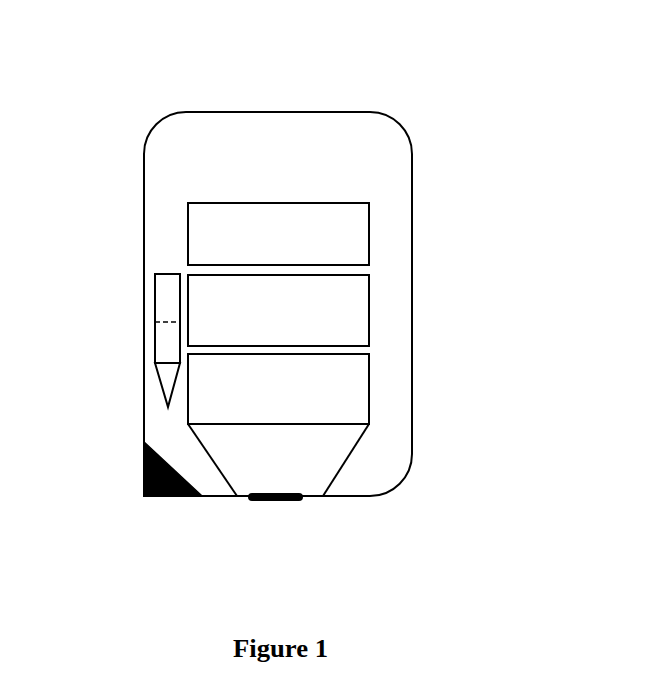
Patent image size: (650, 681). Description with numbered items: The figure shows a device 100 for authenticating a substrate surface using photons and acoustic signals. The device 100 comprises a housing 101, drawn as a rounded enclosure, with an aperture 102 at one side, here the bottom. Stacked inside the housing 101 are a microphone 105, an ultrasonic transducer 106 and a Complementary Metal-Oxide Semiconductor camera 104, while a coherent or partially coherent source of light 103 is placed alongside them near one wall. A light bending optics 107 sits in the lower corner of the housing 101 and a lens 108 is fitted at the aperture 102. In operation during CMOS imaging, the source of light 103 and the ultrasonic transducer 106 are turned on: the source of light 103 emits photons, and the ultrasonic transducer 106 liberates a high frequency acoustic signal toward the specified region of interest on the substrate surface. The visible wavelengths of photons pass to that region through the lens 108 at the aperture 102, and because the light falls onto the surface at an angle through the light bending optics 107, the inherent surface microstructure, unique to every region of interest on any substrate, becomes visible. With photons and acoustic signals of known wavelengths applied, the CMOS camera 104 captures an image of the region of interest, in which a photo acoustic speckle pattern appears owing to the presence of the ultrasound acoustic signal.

The device 100 is at (408, 83).
The housing 101 is at (412, 200).
The aperture 102 is at (238, 497).
The source of light 103 is at (155, 344).
The CMOS camera 104 is at (293, 408).
The microphone 105 is at (343, 233).
The ultrasonic transducer 106 is at (338, 331).
The light bending optics 107 is at (144, 465).
The lens 108 is at (303, 499).